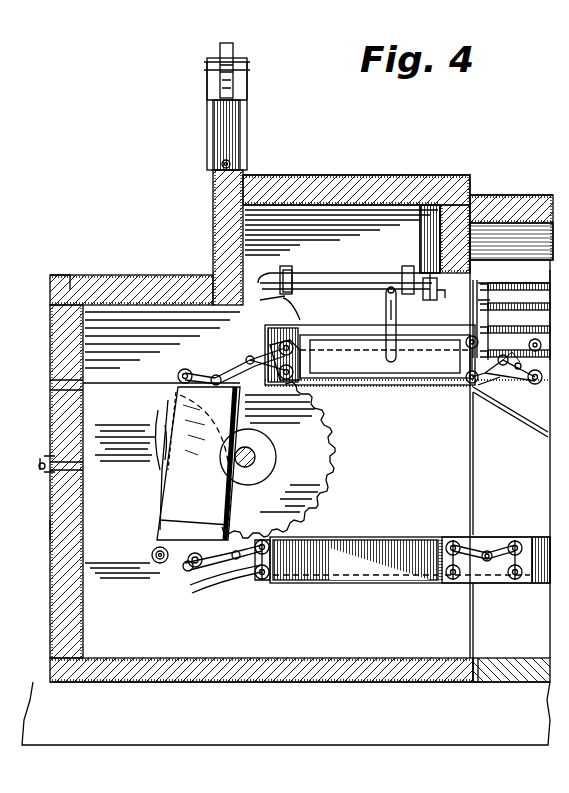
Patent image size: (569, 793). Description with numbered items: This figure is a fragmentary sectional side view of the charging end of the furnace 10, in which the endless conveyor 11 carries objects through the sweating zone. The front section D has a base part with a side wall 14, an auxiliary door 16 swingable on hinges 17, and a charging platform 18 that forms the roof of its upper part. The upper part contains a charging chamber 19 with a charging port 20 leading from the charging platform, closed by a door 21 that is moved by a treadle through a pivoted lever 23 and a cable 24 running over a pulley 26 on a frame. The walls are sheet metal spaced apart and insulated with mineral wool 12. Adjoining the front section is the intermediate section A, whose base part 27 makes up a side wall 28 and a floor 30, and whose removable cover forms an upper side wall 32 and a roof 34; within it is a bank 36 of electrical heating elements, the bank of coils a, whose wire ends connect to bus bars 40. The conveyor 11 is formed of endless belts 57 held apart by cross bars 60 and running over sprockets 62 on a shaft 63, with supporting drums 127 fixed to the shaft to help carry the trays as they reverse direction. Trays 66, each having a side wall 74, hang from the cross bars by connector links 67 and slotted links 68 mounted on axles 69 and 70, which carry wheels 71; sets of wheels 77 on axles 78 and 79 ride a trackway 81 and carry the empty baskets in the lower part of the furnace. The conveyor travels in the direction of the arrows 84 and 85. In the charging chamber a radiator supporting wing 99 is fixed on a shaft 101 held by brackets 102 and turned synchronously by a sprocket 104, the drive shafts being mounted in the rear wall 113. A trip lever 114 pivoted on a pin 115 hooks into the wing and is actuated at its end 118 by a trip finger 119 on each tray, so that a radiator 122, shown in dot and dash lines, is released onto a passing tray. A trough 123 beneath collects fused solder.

The furnace 10 is at (440, 158).
The endless conveyor 11 is at (162, 477).
The mineral wool 12 is at (162, 275).
The side wall 14 is at (261, 622).
The auxiliary door 16 is at (50, 508).
The hinges 17 is at (40, 466).
The charging platform 18 is at (97, 275).
The charging chamber 19 is at (318, 215).
The charging port 20 is at (243, 218).
The door 21 is at (213, 195).
The pivoted lever 23 is at (25, 542).
The cable 24 is at (228, 120).
The pulley 26 is at (233, 45).
The base part 27 is at (510, 688).
The side wall 28 is at (487, 533).
The floor 30 is at (513, 658).
The upper side wall 32 is at (548, 278).
The roof 34 is at (532, 205).
The bank of electrical heating elements 36 is at (482, 288).
The bus bars 40 is at (470, 302).
The endless belts 57 is at (150, 445).
The cross bars 60 is at (250, 356).
The sprockets 62 is at (318, 490).
The shaft 63 is at (256, 457).
The trays 66 is at (322, 330).
The connector links 67 is at (503, 366).
The slotted links 68 is at (518, 378).
The axle 69 is at (468, 383).
The axle 70 is at (540, 388).
The wheels 71 is at (505, 538).
The side wall 74 is at (343, 344).
The wheels 77 is at (262, 580).
The axle 78 is at (468, 336).
The axle 79 is at (529, 345).
The trackway 81 is at (192, 590).
The arrow 84 is at (353, 386).
The arrow 85 is at (358, 531).
The radiator supporting wing 99 is at (325, 268).
The shaft 101 is at (290, 305).
The brackets 102 is at (282, 305).
The sprocket 104 is at (433, 302).
The rear wall 113 is at (498, 205).
The trip lever 114 is at (390, 316).
The pin 115 is at (388, 291).
The end of trip lever 118 is at (388, 350).
The trip finger 119 is at (448, 345).
The radiator 122 is at (355, 245).
The troughs 123 is at (512, 388).
The supporting drums 127 is at (276, 462).
The intermediate section A is at (521, 178).
The front section D is at (298, 171).
The bank of coils a is at (519, 320).